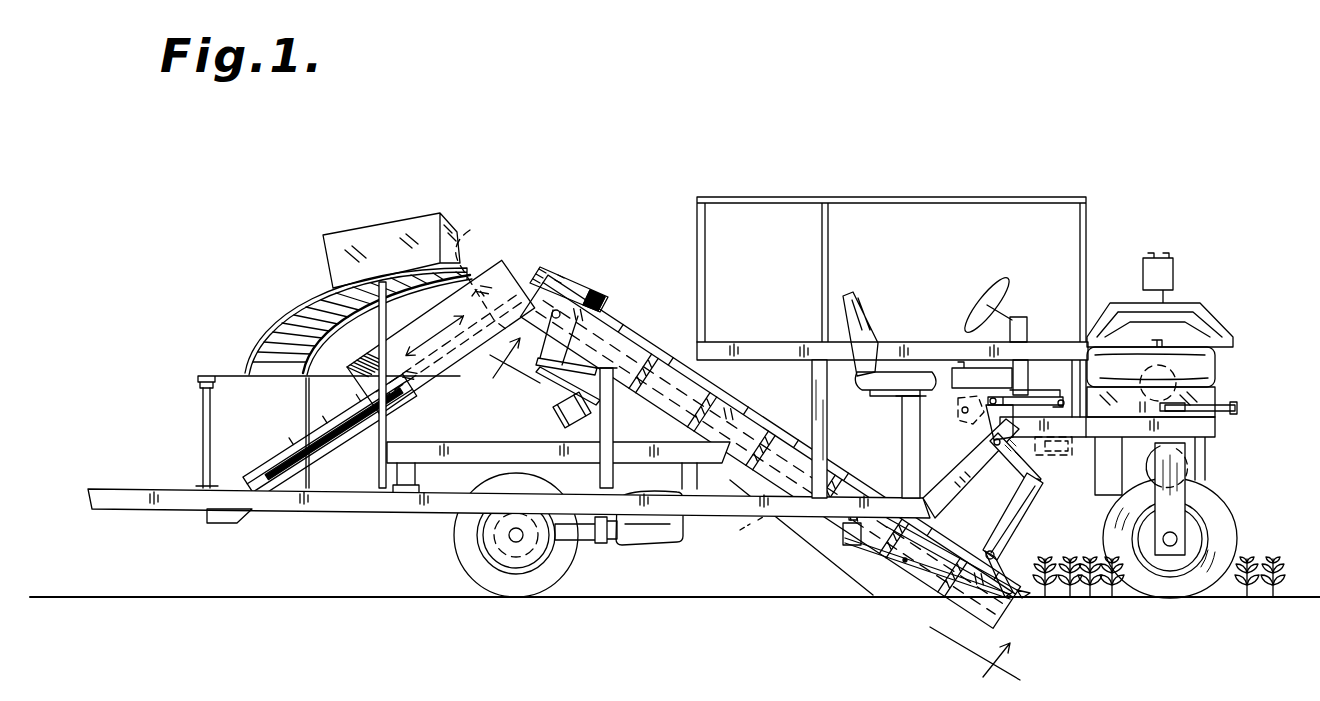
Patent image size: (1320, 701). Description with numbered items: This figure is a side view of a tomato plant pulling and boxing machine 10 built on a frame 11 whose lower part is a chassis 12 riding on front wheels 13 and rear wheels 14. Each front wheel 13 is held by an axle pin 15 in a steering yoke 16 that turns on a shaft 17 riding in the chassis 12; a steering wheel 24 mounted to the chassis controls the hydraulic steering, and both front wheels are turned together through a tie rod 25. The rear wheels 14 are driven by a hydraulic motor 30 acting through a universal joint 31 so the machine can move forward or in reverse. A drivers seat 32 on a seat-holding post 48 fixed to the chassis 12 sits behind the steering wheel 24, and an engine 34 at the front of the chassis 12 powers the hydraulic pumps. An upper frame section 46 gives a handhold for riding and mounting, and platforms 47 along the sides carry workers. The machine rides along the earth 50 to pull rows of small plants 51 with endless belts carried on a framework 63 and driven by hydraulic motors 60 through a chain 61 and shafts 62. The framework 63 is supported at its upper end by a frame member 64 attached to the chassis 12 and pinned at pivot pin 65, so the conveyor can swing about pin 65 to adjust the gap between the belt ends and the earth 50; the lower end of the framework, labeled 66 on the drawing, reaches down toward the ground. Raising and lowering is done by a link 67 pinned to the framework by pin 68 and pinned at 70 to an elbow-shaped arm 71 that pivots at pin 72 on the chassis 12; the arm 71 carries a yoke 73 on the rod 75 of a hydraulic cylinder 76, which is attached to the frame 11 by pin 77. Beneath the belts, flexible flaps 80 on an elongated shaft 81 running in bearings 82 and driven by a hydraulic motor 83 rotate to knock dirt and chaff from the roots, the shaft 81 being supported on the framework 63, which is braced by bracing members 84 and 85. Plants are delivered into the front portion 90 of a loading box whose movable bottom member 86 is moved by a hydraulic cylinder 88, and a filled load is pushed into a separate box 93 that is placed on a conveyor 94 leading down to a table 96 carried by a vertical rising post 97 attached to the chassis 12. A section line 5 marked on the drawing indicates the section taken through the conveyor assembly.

The plant pulling and boxing machine 10 is at (1199, 212).
The frame 11 is at (758, 342).
The chassis 12 is at (1215, 433).
The front wheels 13 is at (1228, 530).
The rear wheels 14 is at (552, 597).
The axle pin 15 is at (1176, 536).
The steering yoke 16 is at (1185, 477).
The steering shaft 17 is at (1202, 410).
The steering wheel 24 is at (993, 290).
The tie rod 25 is at (1240, 408).
The hydraulic motor 30 is at (663, 536).
The universal joint 31 is at (602, 540).
The drivers seat 32 is at (848, 305).
The engine 34 is at (1220, 335).
The upper frame section 46 is at (935, 197).
The platforms 47 is at (469, 445).
The seat-holding post 48 is at (900, 420).
The earth 50 is at (757, 597).
The plants 51 is at (1092, 598).
The section line 5- 5 is at (755, 498).
The hydraulic motors 60 is at (560, 401).
The chain 61 is at (555, 384).
The shafts 62 is at (598, 318).
The framework 63 is at (645, 345).
The frame member 64 is at (605, 423).
The pivot pin 65 is at (553, 273).
The lower conveyor end 66 is at (1028, 604).
The link 67 is at (1022, 510).
The pin 68 is at (992, 550).
The pin 70 is at (1042, 486).
The arm 71 is at (963, 412).
The pin 72 is at (980, 443).
The yoke 73 is at (982, 424).
The hydraulic cylinder rod 75 is at (1023, 393).
The hydraulic cylinder 76 is at (1056, 453).
The pin 77 is at (1066, 442).
The flexible flaps 80 is at (782, 538).
The elongated shaft 81 is at (853, 549).
The bearings 82 is at (908, 561).
The hydraulic motor 83 is at (661, 412).
The bracing member 84 is at (935, 565).
The bracing member 85 is at (607, 397).
The movable bottom member 86 is at (483, 272).
The hydraulic cylinder 88 is at (280, 456).
The front portion 90 is at (510, 280).
The box 93 is at (356, 222).
The conveyor 94 is at (270, 316).
The table 96 is at (198, 378).
The vertical rising post 97 is at (203, 435).